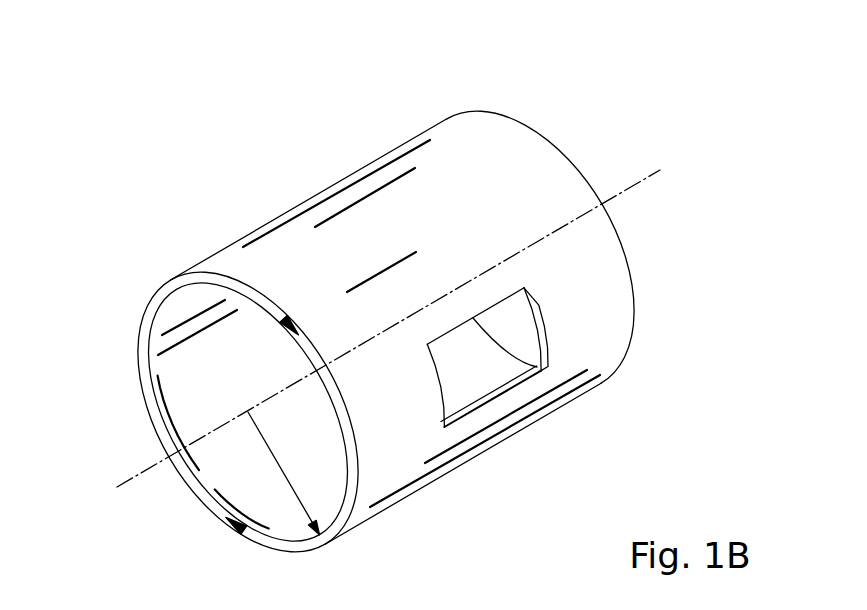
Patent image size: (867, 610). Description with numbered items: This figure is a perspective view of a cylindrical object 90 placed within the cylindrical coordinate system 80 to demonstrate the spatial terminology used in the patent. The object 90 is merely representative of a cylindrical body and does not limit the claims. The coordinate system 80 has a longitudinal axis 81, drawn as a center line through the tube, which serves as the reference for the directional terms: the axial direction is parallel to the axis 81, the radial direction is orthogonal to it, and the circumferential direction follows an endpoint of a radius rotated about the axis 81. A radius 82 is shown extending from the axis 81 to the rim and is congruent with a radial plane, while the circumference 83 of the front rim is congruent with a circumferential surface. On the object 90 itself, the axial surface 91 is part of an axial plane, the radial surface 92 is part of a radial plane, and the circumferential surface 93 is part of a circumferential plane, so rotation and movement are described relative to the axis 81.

The cylindrical coordinate system 80 is at (575, 122).
The longitudinal axis 81 is at (132, 482).
The radius 82 is at (290, 474).
The circumference 83 is at (147, 302).
The cylindrical object 90 is at (424, 102).
The axial surface 91 is at (511, 386).
The radial surface 92 is at (263, 537).
The circumferential surface 93 is at (362, 218).